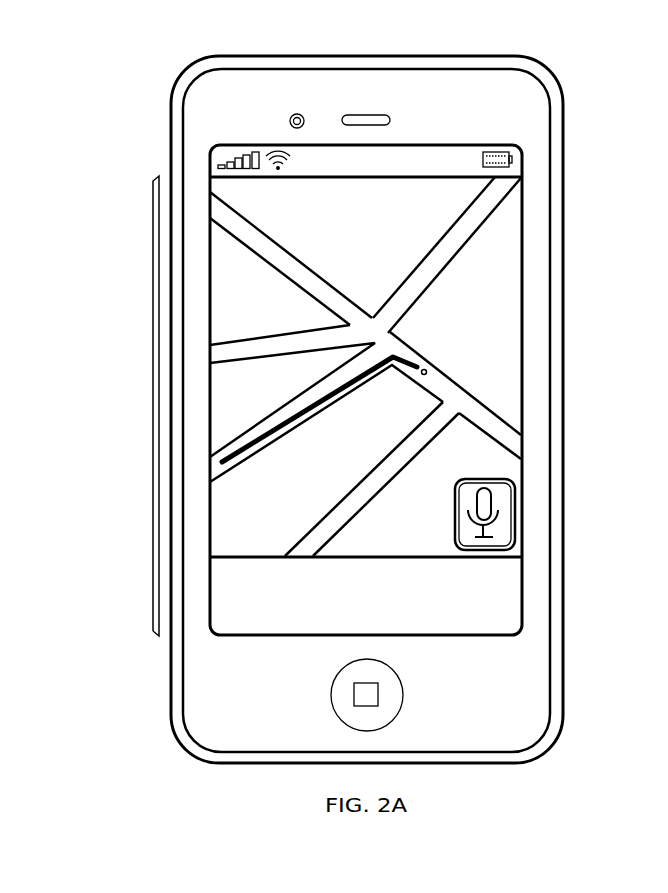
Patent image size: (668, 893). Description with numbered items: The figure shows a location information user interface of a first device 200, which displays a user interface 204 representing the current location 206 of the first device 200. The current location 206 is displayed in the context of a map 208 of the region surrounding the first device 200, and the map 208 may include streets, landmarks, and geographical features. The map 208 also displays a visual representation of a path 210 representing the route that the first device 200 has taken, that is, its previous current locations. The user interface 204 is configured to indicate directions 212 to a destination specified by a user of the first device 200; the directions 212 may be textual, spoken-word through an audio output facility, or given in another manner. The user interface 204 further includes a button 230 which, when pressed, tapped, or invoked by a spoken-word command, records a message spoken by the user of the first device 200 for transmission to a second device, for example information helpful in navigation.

The first device 200 is at (193, 79).
The user interface 204 is at (150, 405).
The current location 206 is at (426, 368).
The map 208 is at (366, 367).
The path 210 is at (305, 412).
The directions 212 is at (515, 597).
The button 230 is at (518, 513).